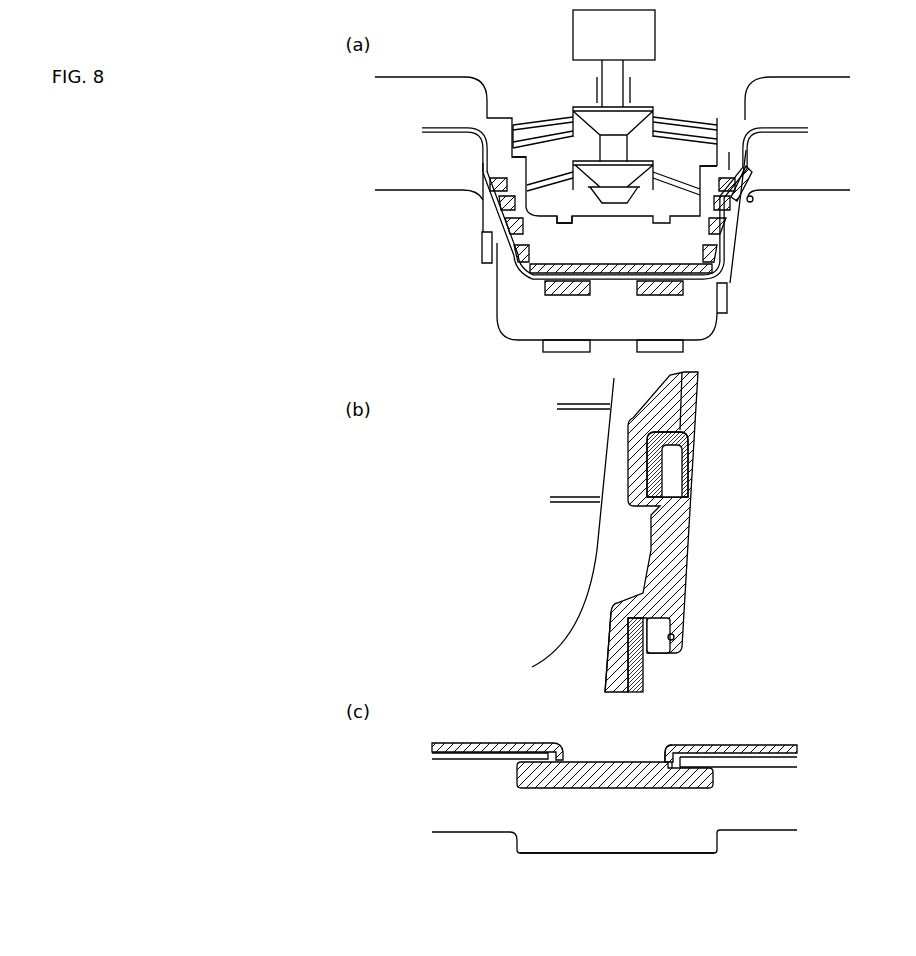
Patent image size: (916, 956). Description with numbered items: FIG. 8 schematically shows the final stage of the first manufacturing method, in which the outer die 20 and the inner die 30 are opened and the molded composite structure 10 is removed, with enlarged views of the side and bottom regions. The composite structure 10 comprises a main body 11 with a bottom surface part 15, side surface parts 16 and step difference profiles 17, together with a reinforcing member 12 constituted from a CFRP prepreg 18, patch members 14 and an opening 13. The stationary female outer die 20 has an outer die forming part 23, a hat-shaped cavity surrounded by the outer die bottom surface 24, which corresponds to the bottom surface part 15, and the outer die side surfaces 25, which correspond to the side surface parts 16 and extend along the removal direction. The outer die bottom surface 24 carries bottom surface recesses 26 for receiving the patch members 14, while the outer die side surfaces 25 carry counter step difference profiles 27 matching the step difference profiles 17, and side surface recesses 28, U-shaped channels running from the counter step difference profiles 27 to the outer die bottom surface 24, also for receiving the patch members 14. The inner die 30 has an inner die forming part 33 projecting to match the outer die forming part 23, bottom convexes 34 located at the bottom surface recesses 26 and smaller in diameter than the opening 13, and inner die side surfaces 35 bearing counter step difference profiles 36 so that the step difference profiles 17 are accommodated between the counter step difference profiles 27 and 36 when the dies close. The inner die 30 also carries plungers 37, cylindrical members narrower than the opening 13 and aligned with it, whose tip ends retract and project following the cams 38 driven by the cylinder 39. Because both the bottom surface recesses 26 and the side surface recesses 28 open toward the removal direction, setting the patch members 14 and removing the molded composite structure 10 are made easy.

The composite structure 10 is at (688, 371).
The main body 11 is at (791, 128).
The reinforcing member 12 is at (588, 672).
The opening 13 is at (482, 194).
The patch member 14 is at (560, 296).
The bottom surface part 15 is at (522, 279).
The side surface part 16 is at (483, 152).
The step difference profile 17 is at (484, 173).
The prepreg 18 is at (723, 748).
The outer die 20 is at (834, 75).
The outer die forming part 23 is at (753, 191).
The outer die bottom surface 24 is at (617, 341).
The outer die side surface 25 is at (754, 200).
The bottom surface recess 26 is at (660, 350).
The counter step difference profile 27 is at (492, 282).
The side surface recess 28 is at (504, 322).
The inner die 30 is at (835, 190).
The inner die forming part 33 is at (537, 214).
The bottom convex 34 is at (575, 222).
The inner die side surface 35 is at (486, 103).
The counter step difference profile 36 is at (519, 161).
The plunger 37 is at (550, 130).
The cam 38 is at (592, 110).
The cylinder 39 is at (655, 16).